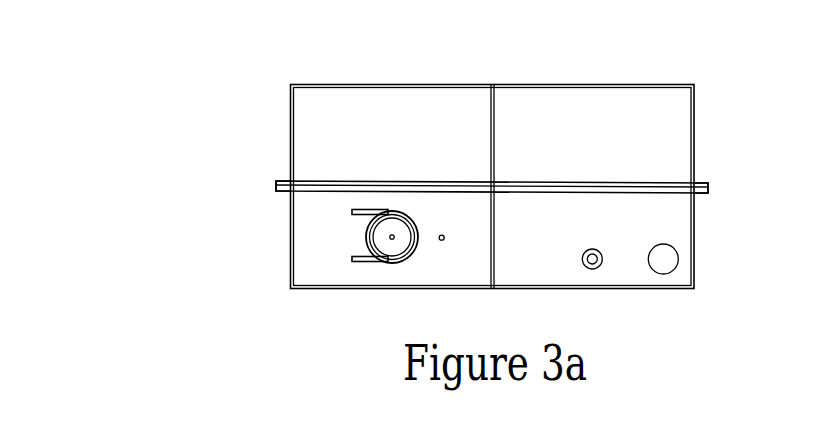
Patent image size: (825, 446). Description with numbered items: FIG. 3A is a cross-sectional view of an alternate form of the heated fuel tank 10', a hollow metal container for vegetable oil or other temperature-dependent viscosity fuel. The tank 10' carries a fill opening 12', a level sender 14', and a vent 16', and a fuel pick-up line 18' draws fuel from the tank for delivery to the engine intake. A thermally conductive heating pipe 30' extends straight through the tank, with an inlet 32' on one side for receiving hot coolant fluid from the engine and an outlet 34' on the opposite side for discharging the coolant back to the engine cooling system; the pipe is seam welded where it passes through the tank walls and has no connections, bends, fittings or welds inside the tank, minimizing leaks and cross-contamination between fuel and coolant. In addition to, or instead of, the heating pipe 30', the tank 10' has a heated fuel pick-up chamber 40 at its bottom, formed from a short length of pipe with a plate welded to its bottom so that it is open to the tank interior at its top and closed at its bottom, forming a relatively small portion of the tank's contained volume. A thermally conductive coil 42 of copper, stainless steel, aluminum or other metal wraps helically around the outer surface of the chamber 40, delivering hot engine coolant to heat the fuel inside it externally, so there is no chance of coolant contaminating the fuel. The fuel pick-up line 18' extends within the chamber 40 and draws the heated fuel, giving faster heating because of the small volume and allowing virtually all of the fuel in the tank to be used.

The fuel tank 10' is at (407, 161).
The fill opening 12' is at (712, 249).
The level sender 14' is at (624, 235).
The vent 16' is at (464, 252).
The fuel pick-up line 18' is at (424, 216).
The heating pipe 30' is at (492, 163).
The inlet 32' is at (260, 164).
The outlet 34' is at (737, 163).
The heated fuel pick-up chamber 40 is at (396, 246).
The thermally conductive coil 42 is at (363, 262).